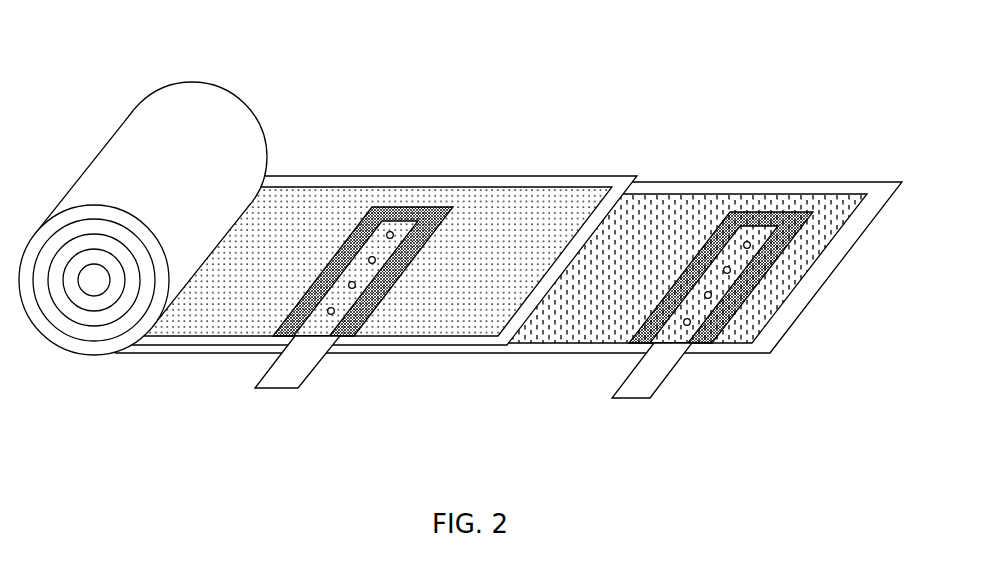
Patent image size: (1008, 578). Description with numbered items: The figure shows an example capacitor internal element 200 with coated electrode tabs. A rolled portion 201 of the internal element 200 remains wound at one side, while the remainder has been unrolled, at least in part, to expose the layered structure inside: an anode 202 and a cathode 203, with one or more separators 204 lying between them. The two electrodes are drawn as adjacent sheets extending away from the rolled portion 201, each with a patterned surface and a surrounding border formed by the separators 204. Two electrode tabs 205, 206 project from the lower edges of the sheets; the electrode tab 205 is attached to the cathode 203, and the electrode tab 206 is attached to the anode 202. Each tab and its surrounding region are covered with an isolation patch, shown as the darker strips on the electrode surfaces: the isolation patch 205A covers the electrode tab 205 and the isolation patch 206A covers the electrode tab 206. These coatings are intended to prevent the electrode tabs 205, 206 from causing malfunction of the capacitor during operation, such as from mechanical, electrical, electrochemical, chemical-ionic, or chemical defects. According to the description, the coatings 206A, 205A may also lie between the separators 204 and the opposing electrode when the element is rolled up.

The capacitor internal element 200 is at (595, 53).
The rolled portion 201 is at (200, 157).
The anode 202 is at (328, 212).
The cathode 203 is at (713, 207).
The separator 204 is at (660, 188).
The electrode tab 205 is at (633, 388).
The isolation patch 205A is at (716, 345).
The electrode tab 206 is at (278, 370).
The isolation patch 206A is at (350, 330).